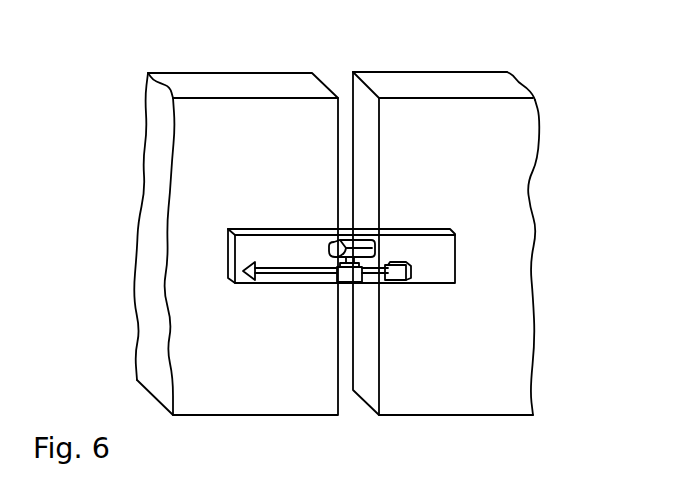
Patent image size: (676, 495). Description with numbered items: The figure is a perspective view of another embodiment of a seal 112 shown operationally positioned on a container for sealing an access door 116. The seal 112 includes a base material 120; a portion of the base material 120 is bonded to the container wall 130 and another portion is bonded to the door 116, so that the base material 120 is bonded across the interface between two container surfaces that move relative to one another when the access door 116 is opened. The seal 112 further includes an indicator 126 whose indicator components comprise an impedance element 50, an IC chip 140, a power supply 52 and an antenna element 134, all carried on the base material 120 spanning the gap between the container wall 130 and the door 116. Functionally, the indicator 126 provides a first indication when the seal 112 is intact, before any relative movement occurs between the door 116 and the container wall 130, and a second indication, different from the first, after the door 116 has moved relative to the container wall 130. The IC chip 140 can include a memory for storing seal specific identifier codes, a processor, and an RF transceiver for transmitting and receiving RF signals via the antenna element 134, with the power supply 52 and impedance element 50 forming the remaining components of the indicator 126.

The impedance element 50 is at (357, 240).
The power supply 52 is at (400, 271).
The seal 112 is at (339, 215).
The access door 116 is at (450, 83).
The base material 120 is at (255, 230).
The indicator 126 is at (325, 275).
The container wall 130 is at (210, 85).
The antenna element 134 is at (280, 274).
The IC chip 140 is at (353, 273).